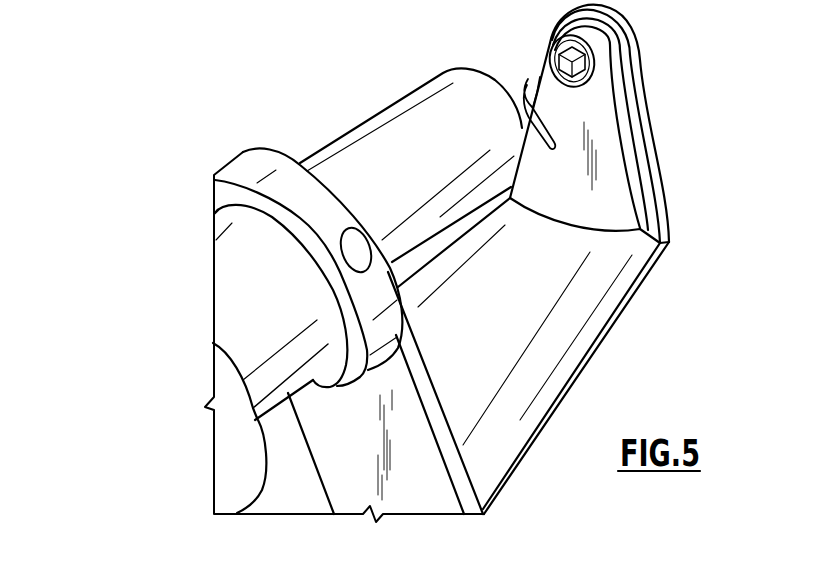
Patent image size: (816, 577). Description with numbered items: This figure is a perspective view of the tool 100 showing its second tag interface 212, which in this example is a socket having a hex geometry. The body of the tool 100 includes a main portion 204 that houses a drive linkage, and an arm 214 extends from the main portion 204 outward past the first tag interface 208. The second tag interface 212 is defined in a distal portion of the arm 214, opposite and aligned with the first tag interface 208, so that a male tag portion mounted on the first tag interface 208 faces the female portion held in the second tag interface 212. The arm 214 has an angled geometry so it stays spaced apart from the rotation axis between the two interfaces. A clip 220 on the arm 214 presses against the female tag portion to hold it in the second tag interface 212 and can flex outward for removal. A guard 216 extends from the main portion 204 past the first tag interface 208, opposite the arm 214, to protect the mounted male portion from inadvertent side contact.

The tool 100 is at (132, 173).
The main portion 204 is at (236, 304).
The first tag interface 208 is at (434, 278).
The second tag interface 212 is at (562, 50).
The arm 214 is at (585, 303).
The guard 216 is at (385, 137).
The clip 220 is at (527, 82).